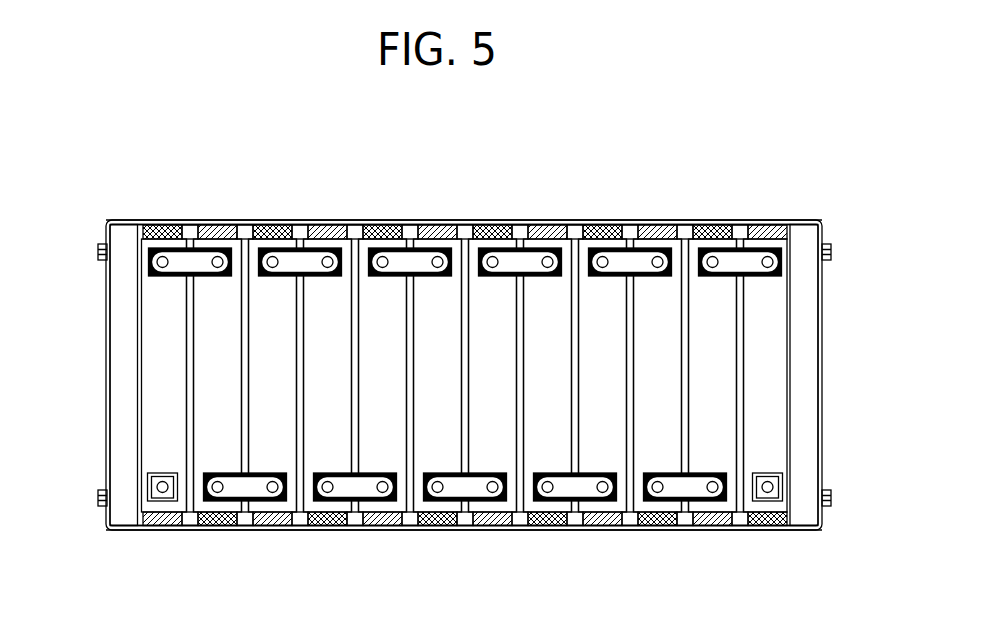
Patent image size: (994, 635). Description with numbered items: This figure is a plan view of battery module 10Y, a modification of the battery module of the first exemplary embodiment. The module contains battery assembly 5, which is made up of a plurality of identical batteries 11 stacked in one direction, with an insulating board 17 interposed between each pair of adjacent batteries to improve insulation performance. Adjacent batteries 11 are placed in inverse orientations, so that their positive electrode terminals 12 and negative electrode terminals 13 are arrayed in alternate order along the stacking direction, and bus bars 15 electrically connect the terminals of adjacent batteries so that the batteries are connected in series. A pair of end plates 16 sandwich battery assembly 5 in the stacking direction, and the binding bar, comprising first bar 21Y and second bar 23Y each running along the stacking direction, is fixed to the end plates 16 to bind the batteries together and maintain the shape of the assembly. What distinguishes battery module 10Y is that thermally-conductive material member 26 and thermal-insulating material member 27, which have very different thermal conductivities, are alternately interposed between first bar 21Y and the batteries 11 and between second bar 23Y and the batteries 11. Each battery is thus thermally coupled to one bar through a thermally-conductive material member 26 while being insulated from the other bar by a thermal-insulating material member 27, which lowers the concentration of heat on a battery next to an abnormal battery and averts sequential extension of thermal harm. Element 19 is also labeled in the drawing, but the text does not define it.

The battery module 10Y is at (798, 135).
The battery 11 is at (702, 508).
The positive electrode terminal 12 is at (266, 250).
The negative electrode terminal 13 is at (285, 535).
The bus bar 15 is at (307, 258).
The end plate 16 is at (120, 388).
The insulating board 17 is at (737, 425).
The cell case 19 is at (270, 432).
The first bar 21Y is at (494, 224).
The second bar 23Y is at (540, 532).
The thermally-conductive material member 26 is at (548, 228).
The thermal-insulating material member 27 is at (605, 228).
The battery assembly 5 is at (594, 532).